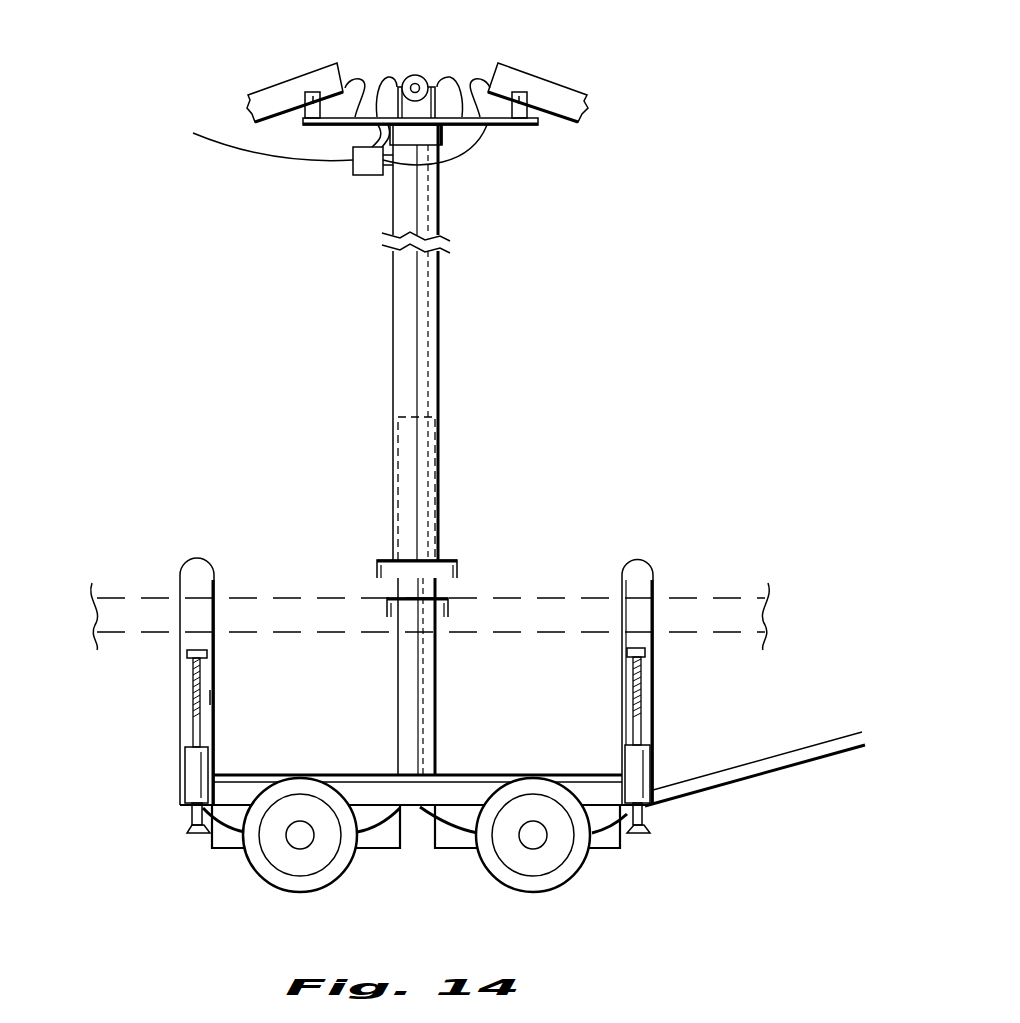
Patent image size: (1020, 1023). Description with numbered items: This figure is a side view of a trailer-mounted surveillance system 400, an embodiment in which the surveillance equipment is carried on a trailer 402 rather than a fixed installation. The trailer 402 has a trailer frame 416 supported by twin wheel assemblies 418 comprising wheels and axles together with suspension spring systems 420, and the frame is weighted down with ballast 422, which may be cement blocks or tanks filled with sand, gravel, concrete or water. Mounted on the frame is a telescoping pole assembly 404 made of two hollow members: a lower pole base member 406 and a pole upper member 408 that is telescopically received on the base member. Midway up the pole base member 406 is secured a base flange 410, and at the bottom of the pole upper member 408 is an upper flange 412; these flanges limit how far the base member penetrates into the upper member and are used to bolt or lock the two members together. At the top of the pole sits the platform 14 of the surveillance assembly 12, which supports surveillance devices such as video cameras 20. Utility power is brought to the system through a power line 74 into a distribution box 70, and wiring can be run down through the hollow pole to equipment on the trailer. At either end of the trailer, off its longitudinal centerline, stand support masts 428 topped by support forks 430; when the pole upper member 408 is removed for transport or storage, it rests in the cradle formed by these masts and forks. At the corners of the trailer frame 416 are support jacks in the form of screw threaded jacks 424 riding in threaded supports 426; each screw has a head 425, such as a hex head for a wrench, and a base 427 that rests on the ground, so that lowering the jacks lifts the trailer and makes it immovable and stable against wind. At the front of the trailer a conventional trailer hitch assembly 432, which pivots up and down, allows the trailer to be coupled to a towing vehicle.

The surveillance assembly 12 is at (290, 167).
The platform 14 is at (518, 127).
The video cameras 20 is at (418, 75).
The distribution box 70 is at (360, 176).
The power line 74 is at (205, 140).
The trailer-mounted surveillance system 400 is at (542, 410).
The trailer 402 is at (155, 803).
The telescoping pole assembly 404 is at (400, 388).
The pole base member 406 is at (437, 700).
The pole upper member 408 is at (393, 322).
The base flange 410 is at (448, 600).
The upper flange 412 is at (377, 565).
The trailer frame 416 is at (237, 783).
The wheel assemblies 418 is at (245, 848).
The suspension spring systems 420 is at (382, 822).
The ballast 422 is at (613, 845).
The screw threaded jacks 424 is at (195, 705).
The head 425 is at (207, 655).
The threaded supports 426 is at (187, 768).
The base 427 is at (190, 830).
The support masts 428 is at (212, 697).
The support forks 430 is at (185, 572).
The trailer hitch assembly 432 is at (710, 790).